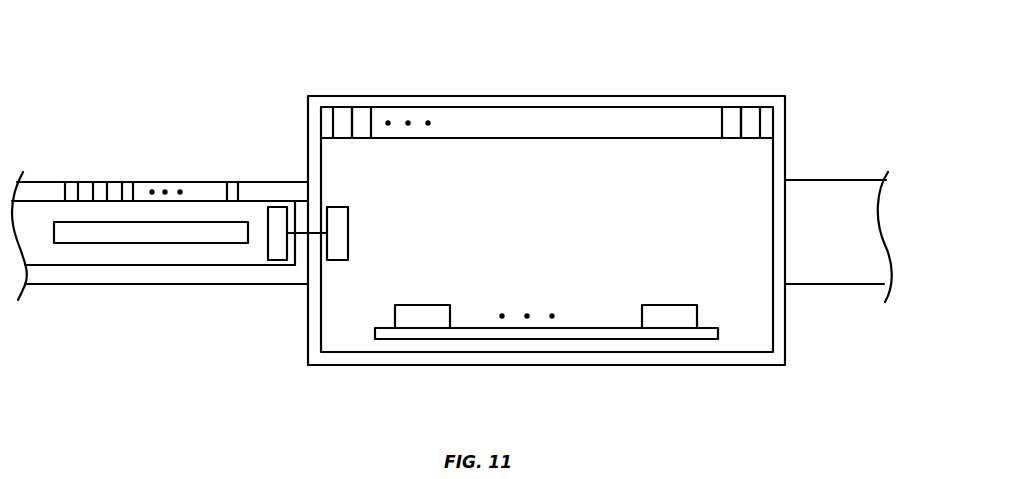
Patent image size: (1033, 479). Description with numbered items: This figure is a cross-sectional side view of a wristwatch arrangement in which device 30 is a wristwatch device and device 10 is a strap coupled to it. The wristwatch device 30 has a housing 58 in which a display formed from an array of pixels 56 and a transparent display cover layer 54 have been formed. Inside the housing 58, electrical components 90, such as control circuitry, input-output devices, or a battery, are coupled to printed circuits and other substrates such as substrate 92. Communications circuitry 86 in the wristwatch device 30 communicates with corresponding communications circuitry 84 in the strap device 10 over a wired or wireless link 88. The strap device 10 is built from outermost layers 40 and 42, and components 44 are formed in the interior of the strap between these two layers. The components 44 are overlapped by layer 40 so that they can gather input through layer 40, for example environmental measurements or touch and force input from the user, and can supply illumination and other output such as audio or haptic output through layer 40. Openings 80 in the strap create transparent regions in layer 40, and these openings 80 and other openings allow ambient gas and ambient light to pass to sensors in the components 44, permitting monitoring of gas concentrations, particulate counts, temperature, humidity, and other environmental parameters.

The device 10 is at (22, 153).
The device 30 is at (788, 58).
The layer 40 is at (195, 182).
The layer 42 is at (73, 280).
The components 44 is at (132, 233).
The display cover layer 54 is at (527, 101).
The pixels 56 is at (362, 132).
The housing 58 is at (779, 121).
The openings 80 is at (72, 182).
The communications circuitry 84 is at (270, 250).
The communications circuitry 86 is at (348, 241).
The link 88 is at (303, 234).
The electrical components 90 is at (423, 312).
The substrate 92 is at (526, 341).